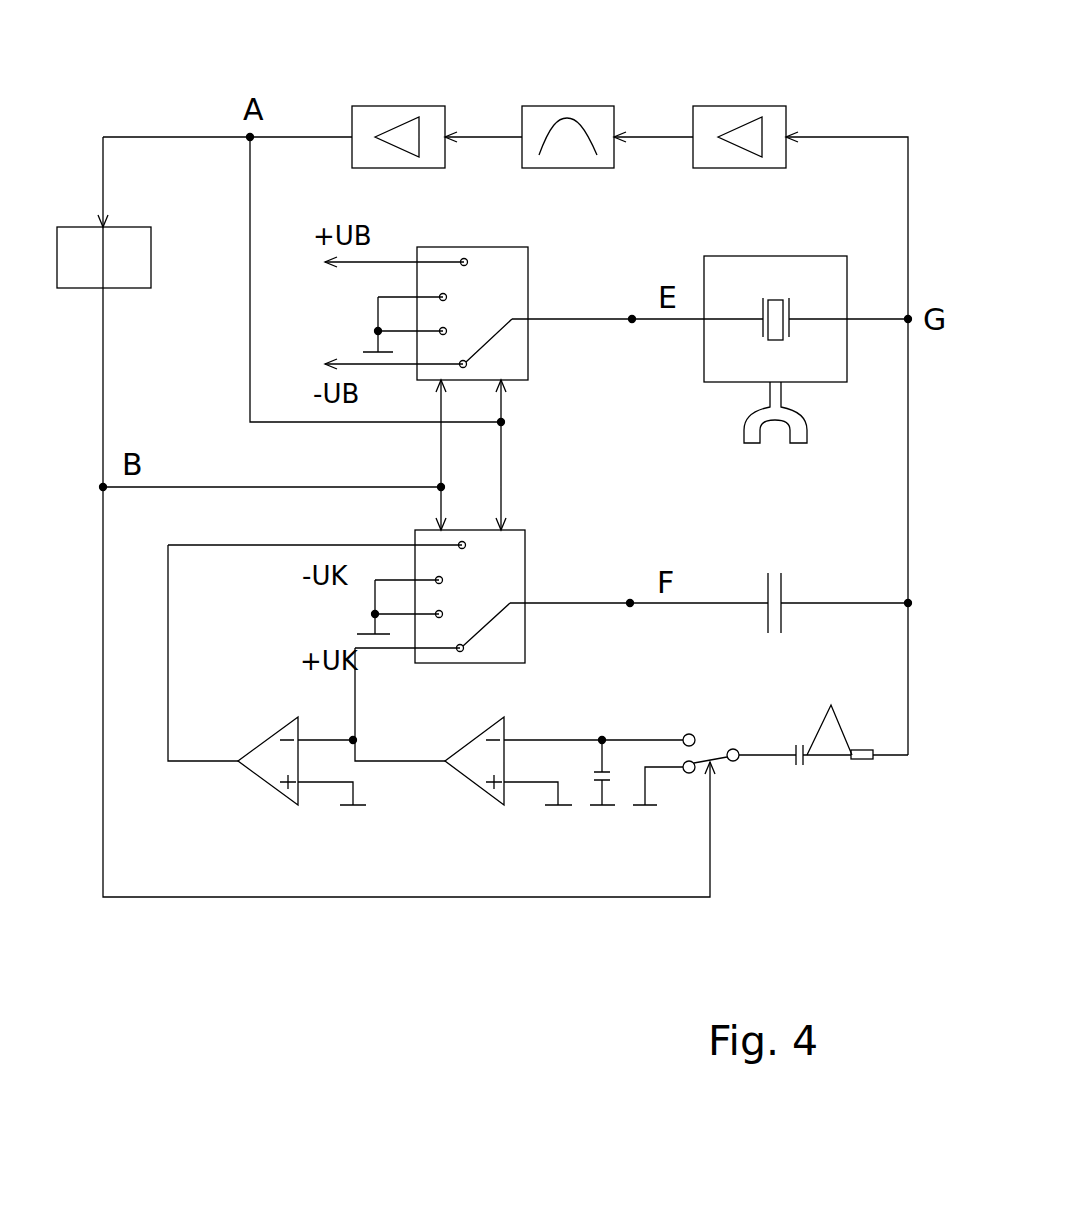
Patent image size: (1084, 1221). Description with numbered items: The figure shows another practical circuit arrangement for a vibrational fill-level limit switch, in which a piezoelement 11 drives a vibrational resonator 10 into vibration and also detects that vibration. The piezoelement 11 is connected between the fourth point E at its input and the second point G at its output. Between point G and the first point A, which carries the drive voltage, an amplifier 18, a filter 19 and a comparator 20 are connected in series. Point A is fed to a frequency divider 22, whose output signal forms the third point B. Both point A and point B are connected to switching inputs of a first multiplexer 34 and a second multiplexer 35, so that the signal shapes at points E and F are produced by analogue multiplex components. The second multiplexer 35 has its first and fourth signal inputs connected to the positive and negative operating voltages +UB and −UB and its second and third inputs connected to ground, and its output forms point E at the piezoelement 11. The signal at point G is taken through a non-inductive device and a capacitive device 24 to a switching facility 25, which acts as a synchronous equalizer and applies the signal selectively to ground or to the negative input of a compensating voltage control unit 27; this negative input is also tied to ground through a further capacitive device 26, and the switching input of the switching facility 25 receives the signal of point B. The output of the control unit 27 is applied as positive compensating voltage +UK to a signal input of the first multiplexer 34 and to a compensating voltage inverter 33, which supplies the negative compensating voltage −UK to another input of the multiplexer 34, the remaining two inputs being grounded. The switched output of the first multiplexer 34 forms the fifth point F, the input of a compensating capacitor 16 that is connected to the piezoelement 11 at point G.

The vibrational resonator 10 is at (744, 428).
The piezoelement 11 is at (790, 256).
The compensating capacitor 16 is at (782, 594).
The amplifier 18 is at (750, 106).
The filter 19 is at (578, 106).
The comparator 20 is at (410, 106).
The frequency divider 22 is at (127, 227).
The capacitive device 24 is at (823, 718).
The switching facility 25 is at (716, 762).
The capacitive device 26 is at (603, 782).
The compensating voltage control unit 27 is at (460, 748).
The compensating voltage inverter 33 is at (253, 750).
The first multiplexer 34 is at (528, 550).
The second multiplexer 35 is at (510, 247).